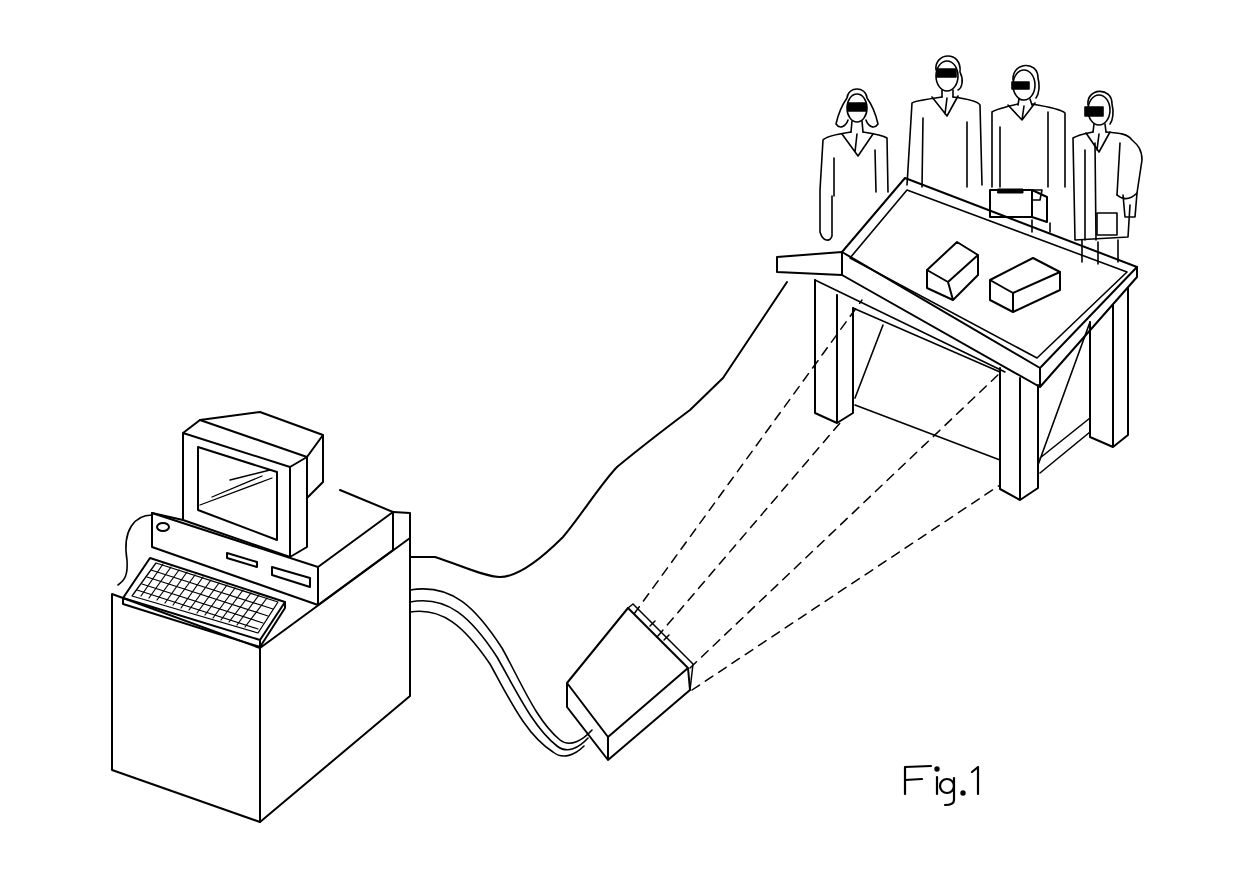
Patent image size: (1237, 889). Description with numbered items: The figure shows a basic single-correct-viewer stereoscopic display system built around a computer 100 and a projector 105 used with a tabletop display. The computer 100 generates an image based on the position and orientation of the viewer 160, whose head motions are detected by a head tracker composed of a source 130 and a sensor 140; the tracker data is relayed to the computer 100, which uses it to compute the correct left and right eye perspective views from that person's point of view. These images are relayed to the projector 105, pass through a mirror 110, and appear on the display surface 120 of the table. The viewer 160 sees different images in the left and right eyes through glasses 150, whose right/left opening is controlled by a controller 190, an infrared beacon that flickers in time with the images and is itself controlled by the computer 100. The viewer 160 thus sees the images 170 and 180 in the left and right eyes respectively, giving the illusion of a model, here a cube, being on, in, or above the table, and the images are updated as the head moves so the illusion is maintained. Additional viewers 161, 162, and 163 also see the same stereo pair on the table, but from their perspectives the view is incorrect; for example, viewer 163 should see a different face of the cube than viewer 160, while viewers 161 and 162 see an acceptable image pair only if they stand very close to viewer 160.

The computer 100 is at (138, 472).
The projector 105 is at (667, 713).
The mirror 110 is at (982, 435).
The display surface 120 is at (903, 237).
The source 130 is at (1020, 190).
The sensor 140 is at (1030, 75).
The glasses 150 is at (845, 94).
The viewer 160 is at (1135, 146).
The viewer 161 is at (1135, 167).
The viewer 162 is at (922, 96).
The viewer 163 is at (823, 145).
The image 170 is at (958, 292).
The image 180 is at (1040, 297).
The controller 190 is at (780, 268).